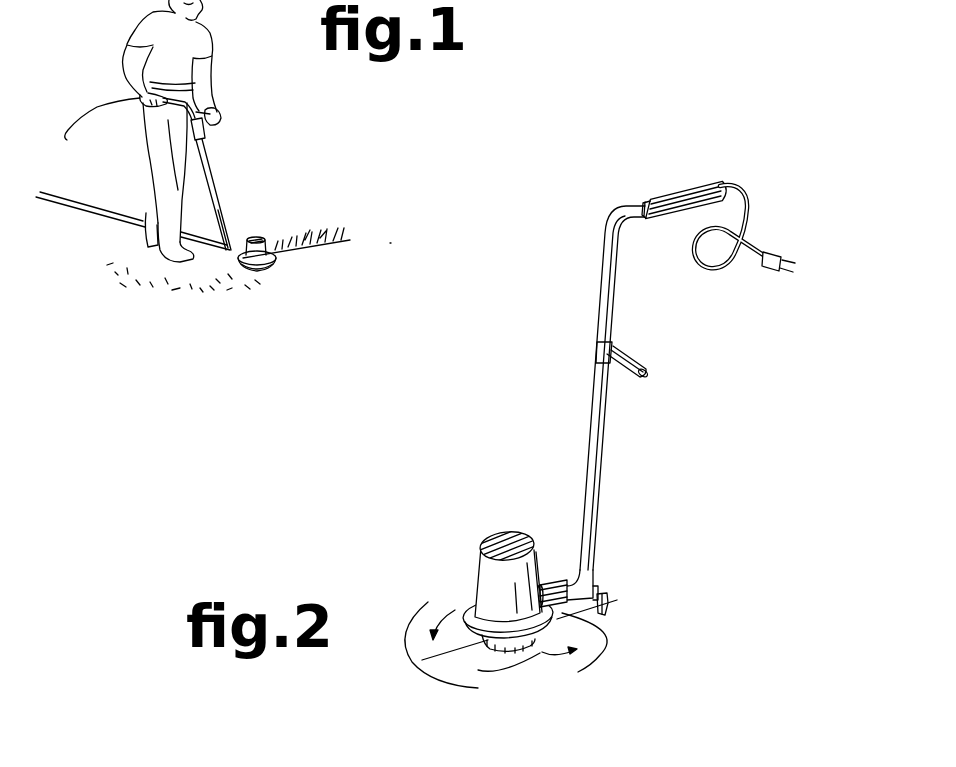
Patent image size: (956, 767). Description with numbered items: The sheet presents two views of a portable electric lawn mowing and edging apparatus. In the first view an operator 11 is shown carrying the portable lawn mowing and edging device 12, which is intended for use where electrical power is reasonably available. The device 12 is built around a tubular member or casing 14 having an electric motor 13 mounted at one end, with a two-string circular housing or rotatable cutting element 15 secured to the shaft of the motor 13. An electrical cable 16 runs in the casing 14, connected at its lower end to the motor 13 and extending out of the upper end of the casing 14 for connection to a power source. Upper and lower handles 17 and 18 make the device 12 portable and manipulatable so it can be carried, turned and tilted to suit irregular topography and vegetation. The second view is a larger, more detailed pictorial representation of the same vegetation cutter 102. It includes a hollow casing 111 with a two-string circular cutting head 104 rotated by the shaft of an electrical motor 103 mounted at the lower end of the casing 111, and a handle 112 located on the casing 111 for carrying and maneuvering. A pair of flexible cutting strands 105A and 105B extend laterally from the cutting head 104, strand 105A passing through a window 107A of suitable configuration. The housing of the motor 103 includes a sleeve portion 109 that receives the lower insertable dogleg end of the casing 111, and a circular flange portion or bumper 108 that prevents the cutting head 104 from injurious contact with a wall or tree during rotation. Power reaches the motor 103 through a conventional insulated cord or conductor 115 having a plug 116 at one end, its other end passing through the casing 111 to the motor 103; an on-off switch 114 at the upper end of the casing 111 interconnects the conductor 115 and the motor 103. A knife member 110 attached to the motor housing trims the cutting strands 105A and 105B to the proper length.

In FIG. 1, the operator 11 is at (227, 61).
In FIG. 1, the lawn mowing and edging device 12 is at (220, 186).
In FIG. 1, the electric motor 13 is at (261, 237).
In FIG. 1, the tubular member or casing 14 is at (222, 213).
In FIG. 1, the two-string circular housing or rotatable cutting element 15 is at (273, 267).
In FIG. 1, the electrical cable 16 is at (67, 133).
In FIG. 1, the upper handle 17 is at (160, 110).
In FIG. 1, the lower handle 18 is at (208, 133).
In FIG. 2, the vegetation cutter 102 is at (619, 381).
In FIG. 2, the electrical motor 103 is at (498, 532).
In FIG. 2, the two-string circular cutting head 104 is at (541, 655).
In FIG. 2, the flexible cutting strand 105A is at (445, 658).
In FIG. 2, the flexible cutting strand 105B is at (582, 617).
In FIG. 2, the window 107A is at (491, 655).
In FIG. 2, the circular flange portion or bumper 108 is at (468, 600).
In FIG. 2, the sleeve portion 109 is at (560, 582).
In FIG. 2, the knife member 110 is at (600, 590).
In FIG. 2, the hollow casing 111 is at (590, 410).
In FIG. 2, the handle 112 is at (630, 352).
In FIG. 2, the on-off switch 114 is at (628, 205).
In FIG. 2, the insulated cord or conductor 115 is at (747, 198).
In FIG. 2, the plug 116 is at (771, 274).